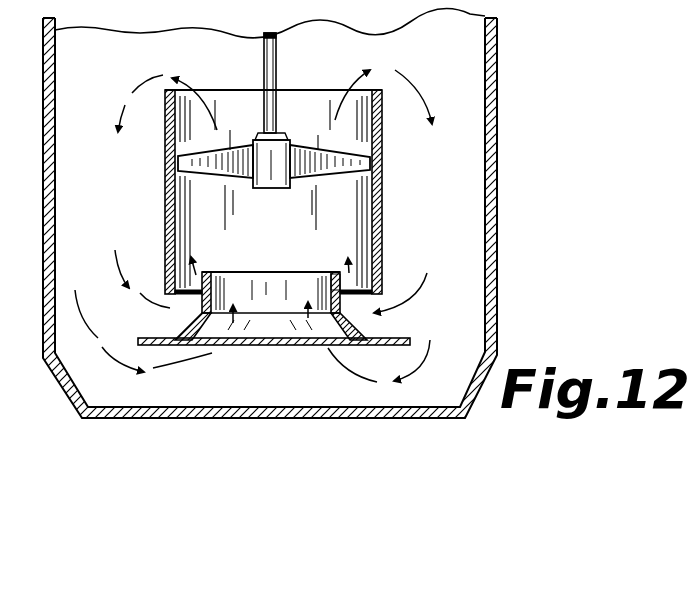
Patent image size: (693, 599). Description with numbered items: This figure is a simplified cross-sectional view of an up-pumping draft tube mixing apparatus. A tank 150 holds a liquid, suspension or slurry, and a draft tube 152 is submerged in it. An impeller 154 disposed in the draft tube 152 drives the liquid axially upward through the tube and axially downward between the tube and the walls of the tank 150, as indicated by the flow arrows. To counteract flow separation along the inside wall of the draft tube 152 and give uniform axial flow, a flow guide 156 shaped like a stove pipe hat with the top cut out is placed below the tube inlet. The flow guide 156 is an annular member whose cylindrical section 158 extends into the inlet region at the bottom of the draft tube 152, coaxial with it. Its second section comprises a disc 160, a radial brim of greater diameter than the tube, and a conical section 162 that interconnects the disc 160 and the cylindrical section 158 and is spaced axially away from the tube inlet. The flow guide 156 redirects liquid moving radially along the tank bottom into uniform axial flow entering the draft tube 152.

The tank 150 is at (497, 178).
The draft tube 152 is at (382, 156).
The impeller 154 is at (280, 136).
The flow guide 156 is at (347, 290).
The cylindrical section 158 is at (335, 283).
The disc 160 is at (410, 341).
The conical section 162 is at (357, 328).